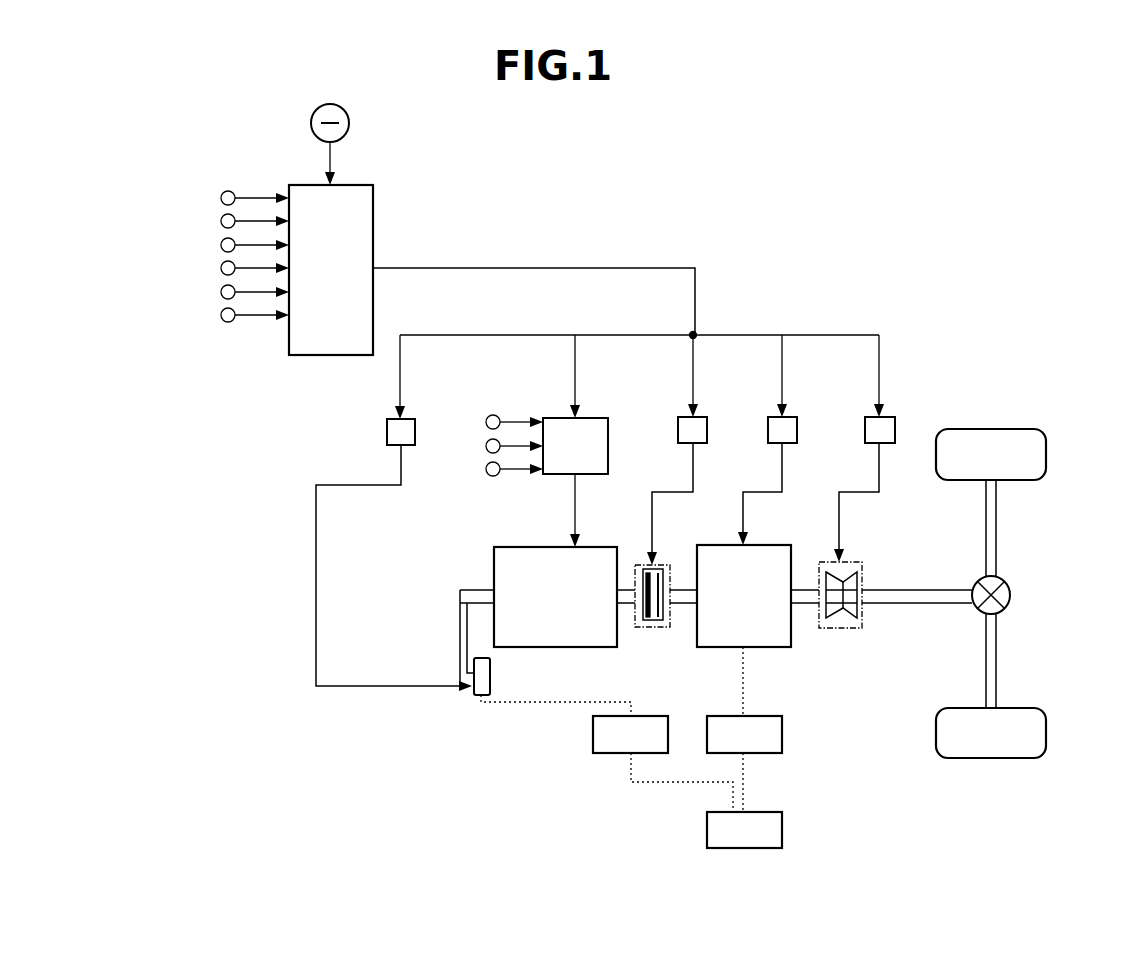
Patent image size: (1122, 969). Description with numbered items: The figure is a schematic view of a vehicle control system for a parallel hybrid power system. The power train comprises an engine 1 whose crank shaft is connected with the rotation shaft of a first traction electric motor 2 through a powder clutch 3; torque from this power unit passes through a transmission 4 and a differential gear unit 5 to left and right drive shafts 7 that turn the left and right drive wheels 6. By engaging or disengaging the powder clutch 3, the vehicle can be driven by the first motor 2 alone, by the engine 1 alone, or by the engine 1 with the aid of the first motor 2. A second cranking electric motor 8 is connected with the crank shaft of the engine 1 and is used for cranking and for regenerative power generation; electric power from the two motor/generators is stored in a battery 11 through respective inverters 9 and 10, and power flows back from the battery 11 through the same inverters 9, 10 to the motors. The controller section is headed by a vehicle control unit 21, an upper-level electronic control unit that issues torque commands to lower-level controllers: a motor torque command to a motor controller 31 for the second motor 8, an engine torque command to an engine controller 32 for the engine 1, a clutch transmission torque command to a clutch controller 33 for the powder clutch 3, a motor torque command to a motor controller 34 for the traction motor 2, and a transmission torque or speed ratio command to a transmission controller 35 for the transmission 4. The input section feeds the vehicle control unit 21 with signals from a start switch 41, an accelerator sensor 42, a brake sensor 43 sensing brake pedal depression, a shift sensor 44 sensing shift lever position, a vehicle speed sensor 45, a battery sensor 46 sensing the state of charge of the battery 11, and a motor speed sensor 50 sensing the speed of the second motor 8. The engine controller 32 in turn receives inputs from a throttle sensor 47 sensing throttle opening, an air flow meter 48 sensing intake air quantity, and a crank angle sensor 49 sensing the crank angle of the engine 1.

The engine 1 is at (597, 547).
The first electric motor 2 is at (791, 545).
The powder clutch 3 is at (645, 630).
The transmission 4 is at (863, 572).
The differential gear unit 5 is at (1011, 590).
The drive wheels 6 is at (1020, 429).
The drive shafts 7 is at (997, 531).
The second electric motor 8 is at (490, 673).
The inverter 9 is at (767, 716).
The inverter 10 is at (650, 716).
The battery 11 is at (765, 812).
The vehicle control unit 21 is at (300, 185).
The motor controller 31 is at (387, 432).
The engine controller 32 is at (595, 418).
The clutch controller 33 is at (700, 417).
The motor controller 34 is at (792, 417).
The transmission controller 35 is at (889, 417).
The start switch 41 is at (316, 110).
The accelerator sensor 42 is at (221, 198).
The brake sensor 43 is at (221, 221).
The shift sensor 44 is at (221, 245).
The vehicle speed sensor 45 is at (221, 268).
The battery sensor 46 is at (221, 292).
The throttle sensor 47 is at (486, 422).
The air flow meter 48 is at (486, 446).
The crank angle sensor 49 is at (486, 469).
The motor speed sensor 50 is at (221, 315).